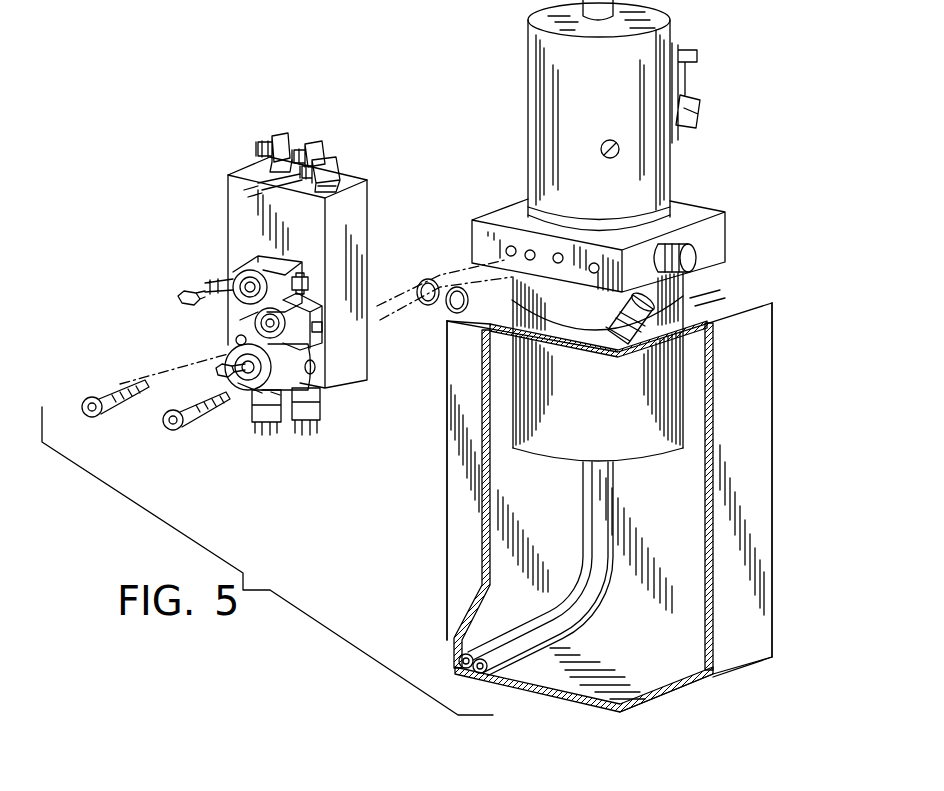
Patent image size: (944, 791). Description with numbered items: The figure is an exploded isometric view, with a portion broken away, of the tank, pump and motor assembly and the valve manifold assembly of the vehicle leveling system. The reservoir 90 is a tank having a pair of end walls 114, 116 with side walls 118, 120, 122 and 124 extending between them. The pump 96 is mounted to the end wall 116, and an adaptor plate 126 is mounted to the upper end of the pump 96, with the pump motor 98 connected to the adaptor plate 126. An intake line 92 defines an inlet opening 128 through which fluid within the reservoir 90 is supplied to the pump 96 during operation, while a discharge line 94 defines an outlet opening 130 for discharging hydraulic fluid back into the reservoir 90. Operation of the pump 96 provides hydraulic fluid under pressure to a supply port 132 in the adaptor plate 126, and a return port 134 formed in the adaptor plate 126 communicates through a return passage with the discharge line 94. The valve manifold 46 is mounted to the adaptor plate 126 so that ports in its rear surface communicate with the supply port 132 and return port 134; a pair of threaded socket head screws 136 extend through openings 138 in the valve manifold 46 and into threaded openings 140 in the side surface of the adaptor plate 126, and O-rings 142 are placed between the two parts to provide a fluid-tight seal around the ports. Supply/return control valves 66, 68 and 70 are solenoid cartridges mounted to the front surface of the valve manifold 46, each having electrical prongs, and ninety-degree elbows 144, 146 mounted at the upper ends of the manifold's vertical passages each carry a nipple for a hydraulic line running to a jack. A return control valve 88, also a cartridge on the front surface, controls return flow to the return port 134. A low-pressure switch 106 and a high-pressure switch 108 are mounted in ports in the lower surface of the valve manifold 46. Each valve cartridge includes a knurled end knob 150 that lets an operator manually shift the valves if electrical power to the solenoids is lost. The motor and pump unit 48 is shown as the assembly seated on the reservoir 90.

The valve manifold 46 is at (178, 183).
The motor and pump assembly 48 is at (482, 101).
The supply/return control valve 66 is at (263, 243).
The supply/return control valve 68 is at (188, 270).
The supply/return control valve 70 is at (314, 291).
The return control valve 88 is at (241, 398).
The reservoir 90 is at (817, 450).
The intake line 92 is at (536, 626).
The discharge line 94 is at (570, 618).
The pump 96 is at (672, 278).
The pump motor 98 is at (672, 35).
The low-pressure switch 106 is at (303, 439).
The high-pressure switch 108 is at (265, 447).
The end wall 114 is at (650, 700).
The end wall 116 is at (742, 300).
The side wall 118 is at (455, 522).
The side wall 120 is at (540, 490).
The side wall 122 is at (690, 490).
The side wall 124 is at (760, 372).
The adaptor plate 126 is at (707, 205).
The inlet opening 128 is at (466, 669).
The outlet opening 130 is at (480, 673).
The supply port 132 is at (529, 250).
The return port 134 is at (558, 253).
The threaded socket head screws 136 is at (100, 418).
The openings 138 is at (235, 342).
The threaded openings 140 is at (511, 246).
The O-rings 142 is at (338, 145).
The 90° elbow 144 is at (324, 130).
The 90° elbow 146 is at (278, 120).
The knurled end knob 150 is at (227, 347).